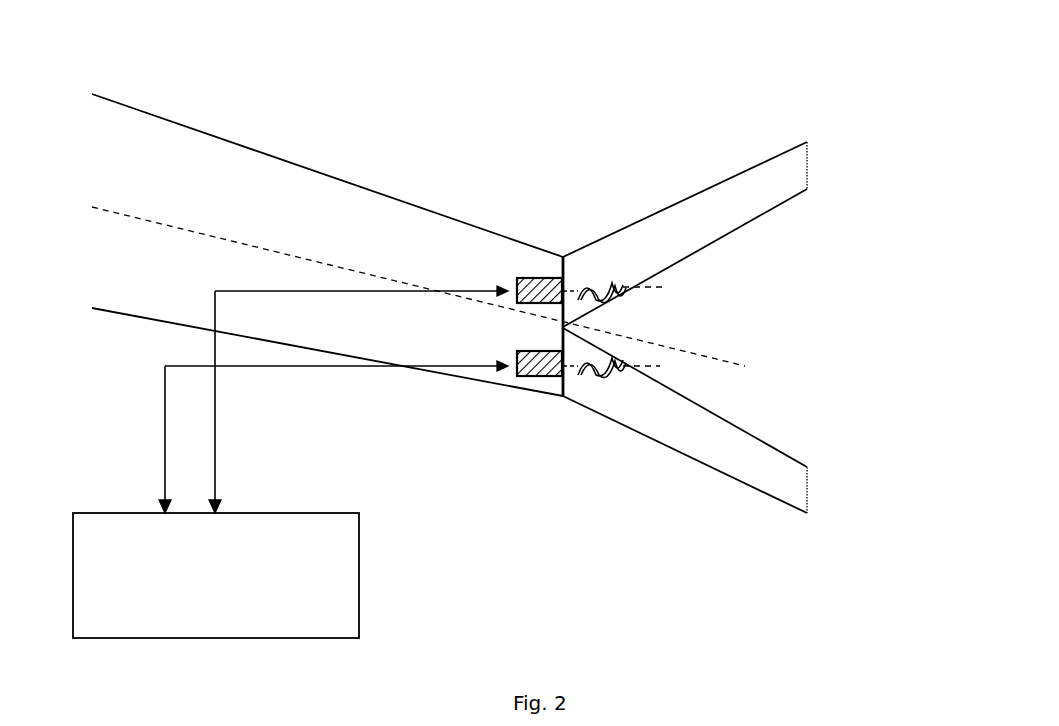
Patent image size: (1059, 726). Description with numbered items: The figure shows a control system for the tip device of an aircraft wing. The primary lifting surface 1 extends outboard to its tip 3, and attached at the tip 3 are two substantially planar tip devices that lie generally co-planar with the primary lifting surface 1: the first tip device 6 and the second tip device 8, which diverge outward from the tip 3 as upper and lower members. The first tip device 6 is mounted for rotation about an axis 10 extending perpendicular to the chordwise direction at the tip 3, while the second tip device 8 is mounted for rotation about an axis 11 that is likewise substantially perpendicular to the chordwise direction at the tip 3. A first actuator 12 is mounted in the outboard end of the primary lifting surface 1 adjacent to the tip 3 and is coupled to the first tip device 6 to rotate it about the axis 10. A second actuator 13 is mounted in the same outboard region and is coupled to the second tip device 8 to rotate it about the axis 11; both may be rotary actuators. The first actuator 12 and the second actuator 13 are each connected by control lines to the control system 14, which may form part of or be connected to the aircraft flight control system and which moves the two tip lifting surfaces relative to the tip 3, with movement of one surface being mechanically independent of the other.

The lifting surface 1 is at (227, 183).
The tip 3 is at (563, 400).
The first tip device 6 is at (746, 196).
The second tip device 8 is at (738, 457).
The axis 10 is at (655, 290).
The axis 11 is at (672, 369).
The first actuator 12 is at (537, 277).
The second actuator 13 is at (528, 376).
The control system 14 is at (332, 590).